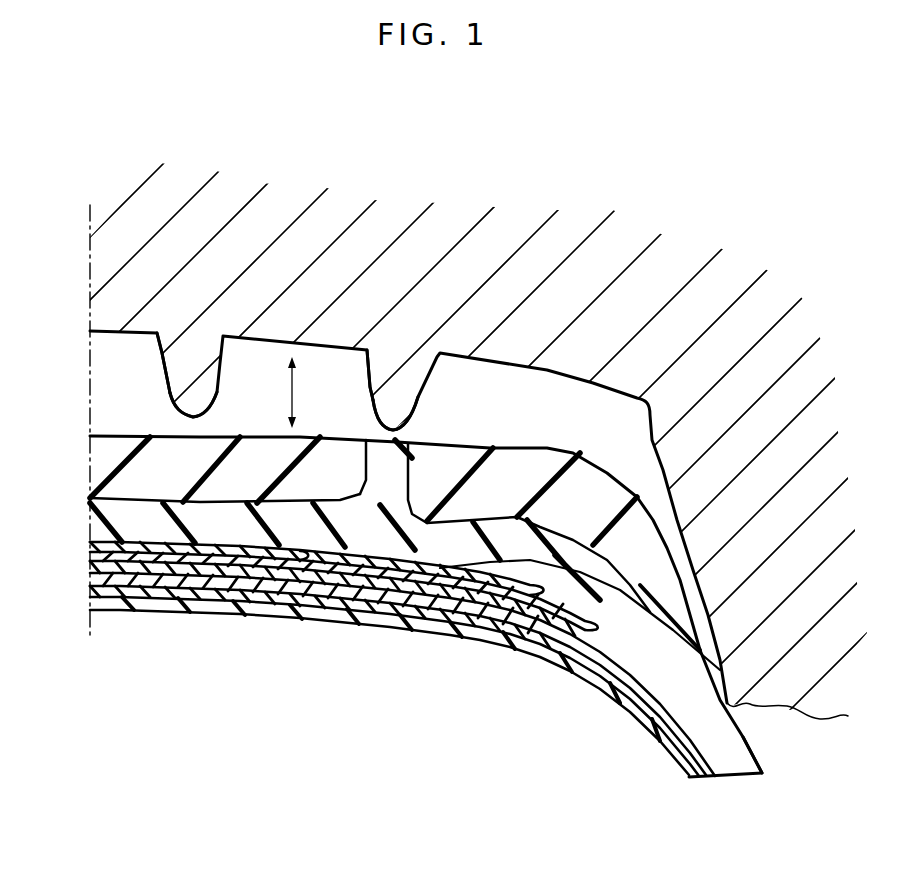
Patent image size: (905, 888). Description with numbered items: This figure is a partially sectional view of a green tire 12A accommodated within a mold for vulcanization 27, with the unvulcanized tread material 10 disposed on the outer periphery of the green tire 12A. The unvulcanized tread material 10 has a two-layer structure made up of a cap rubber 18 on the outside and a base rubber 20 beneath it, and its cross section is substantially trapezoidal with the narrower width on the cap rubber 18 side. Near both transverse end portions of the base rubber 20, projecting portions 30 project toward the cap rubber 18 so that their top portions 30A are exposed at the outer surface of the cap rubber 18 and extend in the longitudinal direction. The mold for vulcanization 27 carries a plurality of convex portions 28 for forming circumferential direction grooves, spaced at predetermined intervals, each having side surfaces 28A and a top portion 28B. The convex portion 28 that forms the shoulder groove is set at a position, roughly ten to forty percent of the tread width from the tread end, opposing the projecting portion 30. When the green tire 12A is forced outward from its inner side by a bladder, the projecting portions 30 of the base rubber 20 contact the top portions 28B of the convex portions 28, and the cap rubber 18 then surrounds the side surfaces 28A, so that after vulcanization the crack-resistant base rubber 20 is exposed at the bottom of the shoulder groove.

The mold for vulcanization 27 is at (125, 247).
The convex portion for forming circumferential direction groove 28 is at (158, 365).
The side surface of convex portion 28A is at (222, 371).
The top portion of convex portion 28B is at (198, 408).
The cap rubber 18 is at (96, 440).
The unvulcanized tread material 10 is at (78, 437).
The base rubber 20 is at (95, 522).
The projecting portion 30 is at (455, 446).
The top portion of projecting portion 30A is at (400, 483).
The green tire 12A is at (756, 750).